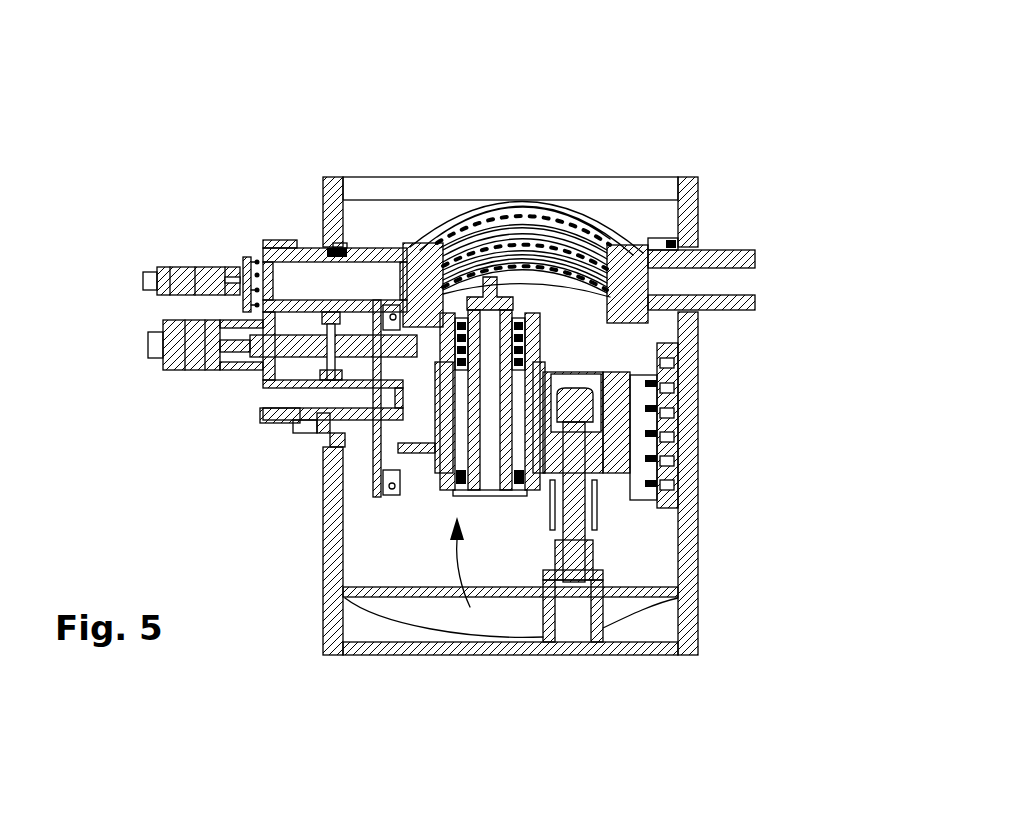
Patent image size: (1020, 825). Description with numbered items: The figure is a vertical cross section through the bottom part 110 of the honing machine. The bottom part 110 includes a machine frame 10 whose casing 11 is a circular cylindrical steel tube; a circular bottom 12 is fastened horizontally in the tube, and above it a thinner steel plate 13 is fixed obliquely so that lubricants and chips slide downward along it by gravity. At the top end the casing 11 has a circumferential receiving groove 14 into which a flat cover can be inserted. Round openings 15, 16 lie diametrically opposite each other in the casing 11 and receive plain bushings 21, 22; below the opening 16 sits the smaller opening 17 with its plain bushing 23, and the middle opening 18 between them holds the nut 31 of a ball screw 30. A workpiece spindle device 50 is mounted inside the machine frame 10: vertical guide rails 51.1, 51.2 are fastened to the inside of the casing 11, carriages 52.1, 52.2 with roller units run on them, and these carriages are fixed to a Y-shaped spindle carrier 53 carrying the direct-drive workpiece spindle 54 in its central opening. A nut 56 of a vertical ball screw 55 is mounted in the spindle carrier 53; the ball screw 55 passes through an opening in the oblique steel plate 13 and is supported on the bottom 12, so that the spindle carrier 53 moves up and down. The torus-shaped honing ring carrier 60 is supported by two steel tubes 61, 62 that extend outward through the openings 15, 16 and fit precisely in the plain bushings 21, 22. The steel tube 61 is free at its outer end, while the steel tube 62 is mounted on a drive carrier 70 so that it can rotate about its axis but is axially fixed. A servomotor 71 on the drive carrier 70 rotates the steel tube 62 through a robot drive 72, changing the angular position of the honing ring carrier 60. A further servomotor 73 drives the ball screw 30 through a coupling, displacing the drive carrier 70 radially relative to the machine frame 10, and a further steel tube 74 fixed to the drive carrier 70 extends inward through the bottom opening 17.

The bottom part 110 is at (700, 57).
The machine frame 10 is at (724, 638).
The casing 11 is at (690, 547).
The bottom 12 is at (397, 648).
The thinner steel plate 13 is at (672, 592).
The receiving groove 14 is at (687, 190).
The round opening 15 is at (692, 240).
The round opening 16 is at (327, 247).
The round opening 17 is at (297, 430).
The round opening 18 is at (332, 312).
The plain bushing 21 is at (672, 207).
The plain bushing 22 is at (342, 243).
The plain bushing 23 is at (322, 428).
The ball screw 30 is at (240, 360).
The nut 31 is at (230, 372).
The workpiece spindle device 50 is at (490, 480).
The first guide rail 51.1 is at (683, 377).
The guide rail 51.2 is at (393, 492).
The carriage 52.1 is at (663, 432).
The carriage 52.2 is at (420, 480).
The spindle carrier 53 is at (637, 372).
The workpiece spindle 54 is at (538, 508).
The ball screw 55 is at (620, 550).
The nut 56 is at (645, 425).
The honing ring carrier 60 is at (553, 210).
The steel tube 61 is at (748, 257).
The steel tube 62 is at (287, 245).
The drive carrier 70 is at (263, 423).
The servomotor 71 is at (158, 283).
The robot drive 72 is at (237, 255).
The further servomotor 73 is at (158, 348).
The further steel tube 74 is at (290, 417).